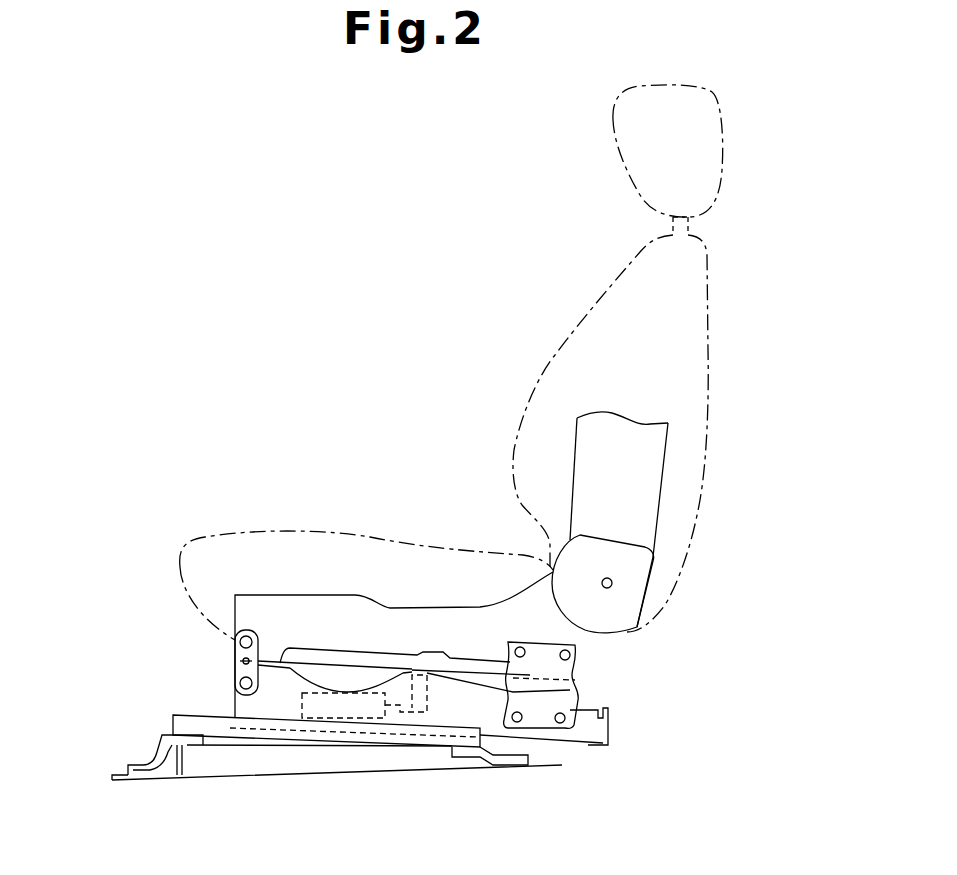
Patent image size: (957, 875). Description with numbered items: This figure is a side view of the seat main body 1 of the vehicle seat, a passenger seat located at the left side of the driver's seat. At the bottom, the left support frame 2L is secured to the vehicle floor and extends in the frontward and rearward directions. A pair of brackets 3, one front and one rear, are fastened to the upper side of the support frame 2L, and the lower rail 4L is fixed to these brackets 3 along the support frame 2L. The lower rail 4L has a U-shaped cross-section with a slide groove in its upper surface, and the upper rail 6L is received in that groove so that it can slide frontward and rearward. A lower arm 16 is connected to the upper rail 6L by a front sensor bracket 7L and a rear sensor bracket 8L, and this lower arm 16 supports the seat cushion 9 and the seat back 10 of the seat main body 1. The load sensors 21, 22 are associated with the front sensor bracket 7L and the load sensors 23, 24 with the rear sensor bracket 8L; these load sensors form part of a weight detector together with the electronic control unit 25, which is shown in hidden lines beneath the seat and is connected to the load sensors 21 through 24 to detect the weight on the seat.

The seat main body 1 is at (522, 327).
The seat back 10 is at (708, 343).
The seat cushion 9 is at (242, 524).
The lower arm 16 is at (330, 600).
The front sensor bracket 7L is at (253, 637).
The load sensor 22 is at (301, 670).
The load sensor 21 is at (395, 670).
The load sensor 24 is at (555, 685).
The load sensor 23 is at (578, 683).
The rear sensor bracket 8L is at (543, 642).
The upper rail 6L is at (588, 740).
The lower rail 4L is at (173, 715).
The left support frame 2L is at (112, 775).
The bracket 3 is at (143, 764).
The electronic control unit 25 is at (302, 705).